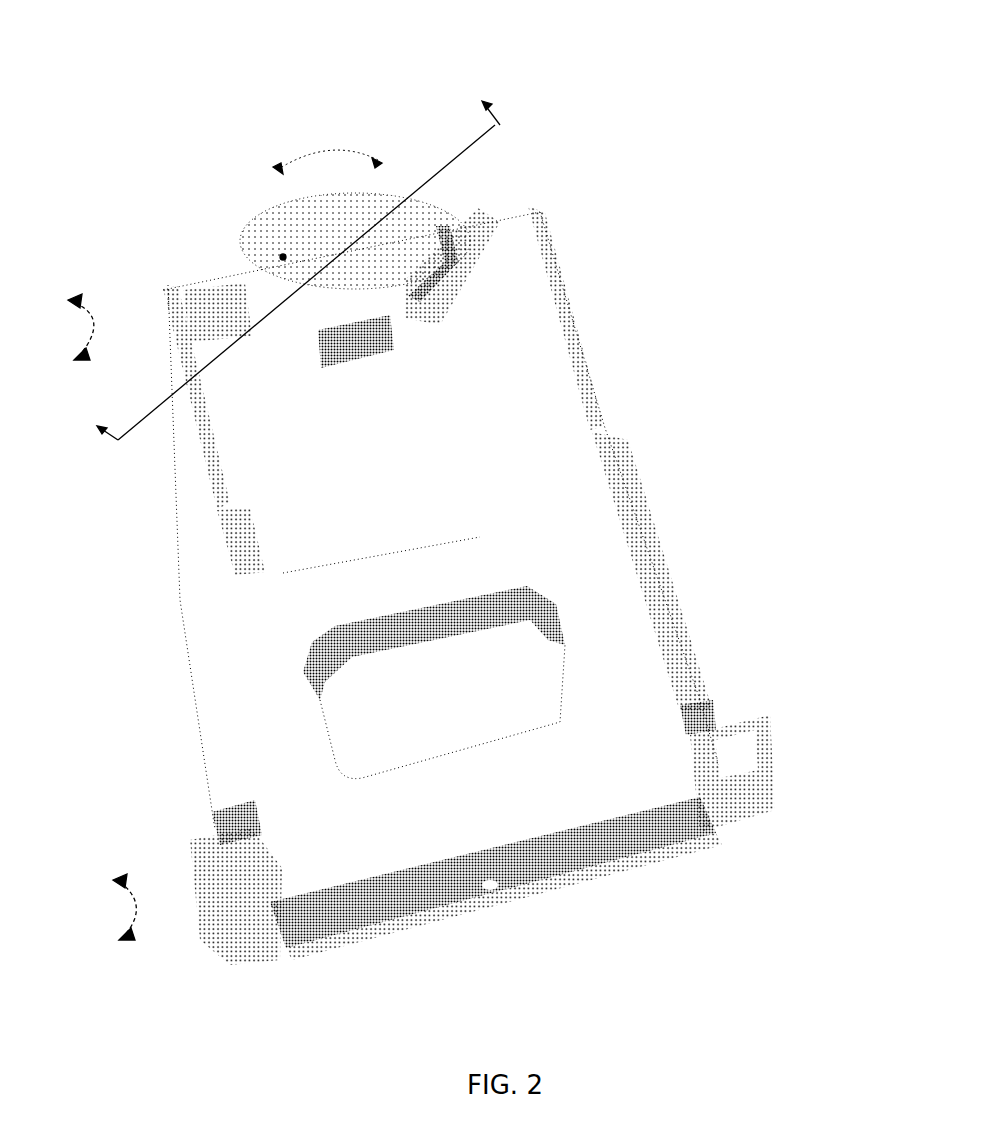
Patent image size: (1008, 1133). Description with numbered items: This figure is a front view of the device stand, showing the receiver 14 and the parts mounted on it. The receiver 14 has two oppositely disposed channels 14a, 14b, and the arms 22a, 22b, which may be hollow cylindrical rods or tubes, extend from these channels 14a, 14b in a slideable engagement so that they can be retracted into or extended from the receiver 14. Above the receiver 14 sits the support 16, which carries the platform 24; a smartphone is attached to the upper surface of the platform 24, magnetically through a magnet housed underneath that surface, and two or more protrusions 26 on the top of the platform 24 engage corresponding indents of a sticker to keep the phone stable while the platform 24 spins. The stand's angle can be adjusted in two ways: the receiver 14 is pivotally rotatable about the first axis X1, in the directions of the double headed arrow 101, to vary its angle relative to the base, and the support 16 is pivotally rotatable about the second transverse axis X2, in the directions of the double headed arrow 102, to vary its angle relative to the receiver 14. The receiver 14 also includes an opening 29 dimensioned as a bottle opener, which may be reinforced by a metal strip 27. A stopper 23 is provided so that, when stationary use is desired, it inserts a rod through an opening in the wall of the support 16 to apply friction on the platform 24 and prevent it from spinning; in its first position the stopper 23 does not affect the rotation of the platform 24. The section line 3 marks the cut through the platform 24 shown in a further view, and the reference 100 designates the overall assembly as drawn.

The device 100 is at (330, 145).
The double headed arrow 101 is at (135, 885).
The double headed arrow 102 is at (95, 310).
The section line 3- 3 is at (283, 259).
The receiver 14 is at (657, 578).
The channel 14a is at (602, 427).
The channel 14b is at (222, 507).
The support 16 is at (458, 245).
The arm 22a is at (555, 318).
The arm 22b is at (188, 484).
The stopper 23 is at (358, 353).
The platform 24 is at (368, 230).
The protrusions 26 is at (283, 257).
The metal strip 27 is at (440, 635).
The opening 29 is at (378, 720).
The first axis X1 is at (767, 767).
The second transverse axis X2 is at (543, 220).